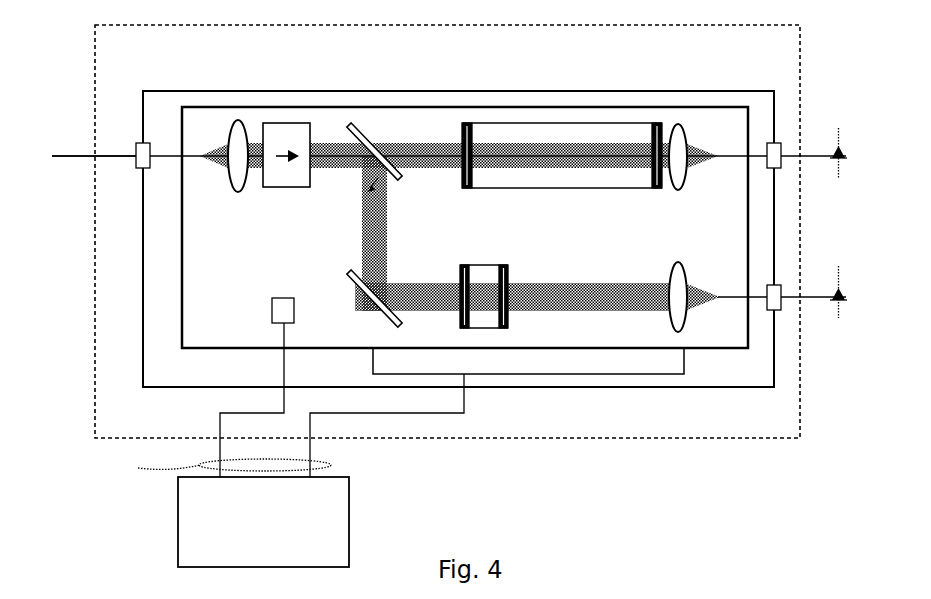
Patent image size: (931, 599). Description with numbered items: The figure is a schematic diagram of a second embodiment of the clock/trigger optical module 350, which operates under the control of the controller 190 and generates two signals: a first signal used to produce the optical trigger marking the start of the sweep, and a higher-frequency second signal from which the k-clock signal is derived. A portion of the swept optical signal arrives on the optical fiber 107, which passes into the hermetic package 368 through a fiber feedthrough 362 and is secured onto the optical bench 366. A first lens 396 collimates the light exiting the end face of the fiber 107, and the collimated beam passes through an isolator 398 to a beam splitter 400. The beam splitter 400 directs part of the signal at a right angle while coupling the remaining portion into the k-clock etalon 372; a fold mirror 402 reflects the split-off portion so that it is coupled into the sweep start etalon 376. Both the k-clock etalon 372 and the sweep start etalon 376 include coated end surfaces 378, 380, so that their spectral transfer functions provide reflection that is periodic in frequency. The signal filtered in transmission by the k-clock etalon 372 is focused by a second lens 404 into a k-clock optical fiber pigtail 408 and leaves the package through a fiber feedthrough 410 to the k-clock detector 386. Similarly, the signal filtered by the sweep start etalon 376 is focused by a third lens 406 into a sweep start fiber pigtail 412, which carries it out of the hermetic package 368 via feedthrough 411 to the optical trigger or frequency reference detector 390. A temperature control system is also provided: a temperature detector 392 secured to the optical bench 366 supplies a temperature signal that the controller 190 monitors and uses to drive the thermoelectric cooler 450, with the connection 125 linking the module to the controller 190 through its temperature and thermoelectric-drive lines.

The optical fiber 107 is at (78, 155).
The electrical connection 125 is at (219, 469).
The controller 190 is at (263, 522).
The clock/trigger optical module 350 is at (447, 231).
The fiber feedthrough 362 is at (143, 143).
The optical bench 366 is at (736, 350).
The hermetic package 368 is at (774, 341).
The k-clock etalon 372 is at (540, 189).
The sweep start etalon 376 is at (493, 264).
The coated end surface 378 is at (462, 190).
The coated end surface 380 is at (655, 189).
The k-clock detector 386 is at (836, 146).
The optical trigger or frequency reference detector 390 is at (840, 288).
The temperature detector 392 is at (272, 310).
The first lens 396 is at (238, 192).
The isolator 398 is at (292, 187).
The beam splitter 400 is at (368, 188).
The fold mirror 402 is at (366, 308).
The second lens 404 is at (671, 191).
The third lens 406 is at (670, 272).
The k-clock optical fiber pigtail 408 is at (745, 158).
The fiber feedthrough 410 is at (777, 142).
The feedthrough 411 is at (782, 285).
The sweep start fiber pigtail 412 is at (742, 296).
The thermoelectric cooler 450 is at (528, 361).